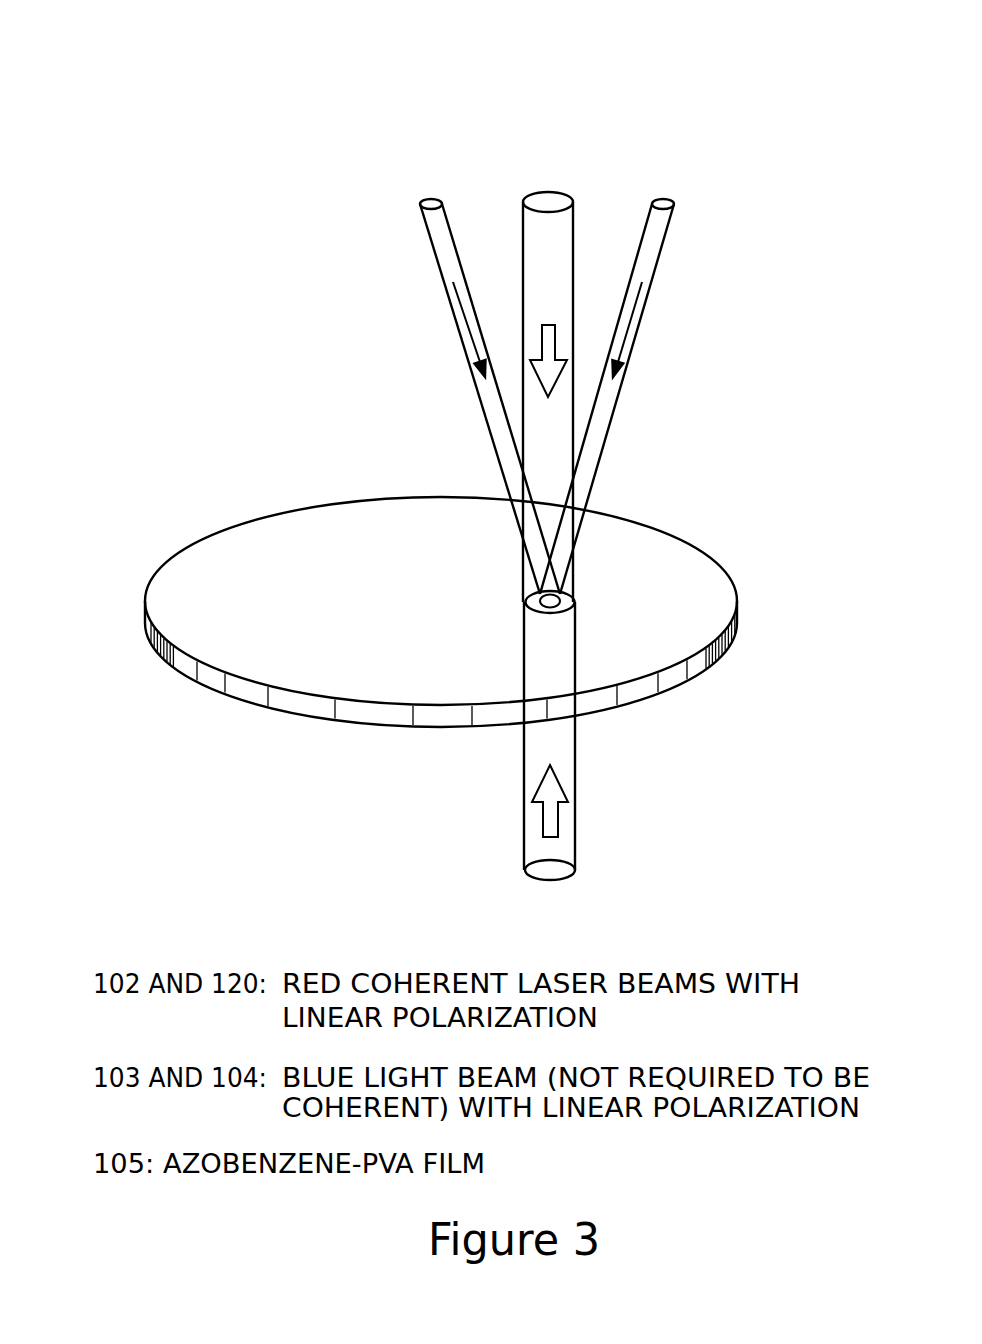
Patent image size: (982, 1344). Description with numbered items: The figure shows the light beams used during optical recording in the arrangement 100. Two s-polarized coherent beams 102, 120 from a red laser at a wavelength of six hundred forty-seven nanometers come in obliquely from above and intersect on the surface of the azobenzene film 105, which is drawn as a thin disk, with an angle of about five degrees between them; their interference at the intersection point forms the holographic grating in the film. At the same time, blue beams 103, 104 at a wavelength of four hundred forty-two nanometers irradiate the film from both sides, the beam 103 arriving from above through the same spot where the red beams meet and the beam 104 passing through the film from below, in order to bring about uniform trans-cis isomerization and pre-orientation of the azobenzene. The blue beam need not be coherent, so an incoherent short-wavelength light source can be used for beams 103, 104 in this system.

The optical recording system 100 is at (533, 66).
The s-polarized coherent beam 102 is at (431, 198).
The s-polarized coherent beam 120 is at (661, 198).
The blue light beam 103 is at (545, 210).
The blue light beam 104 is at (552, 872).
The azobenzene film 105 is at (223, 624).